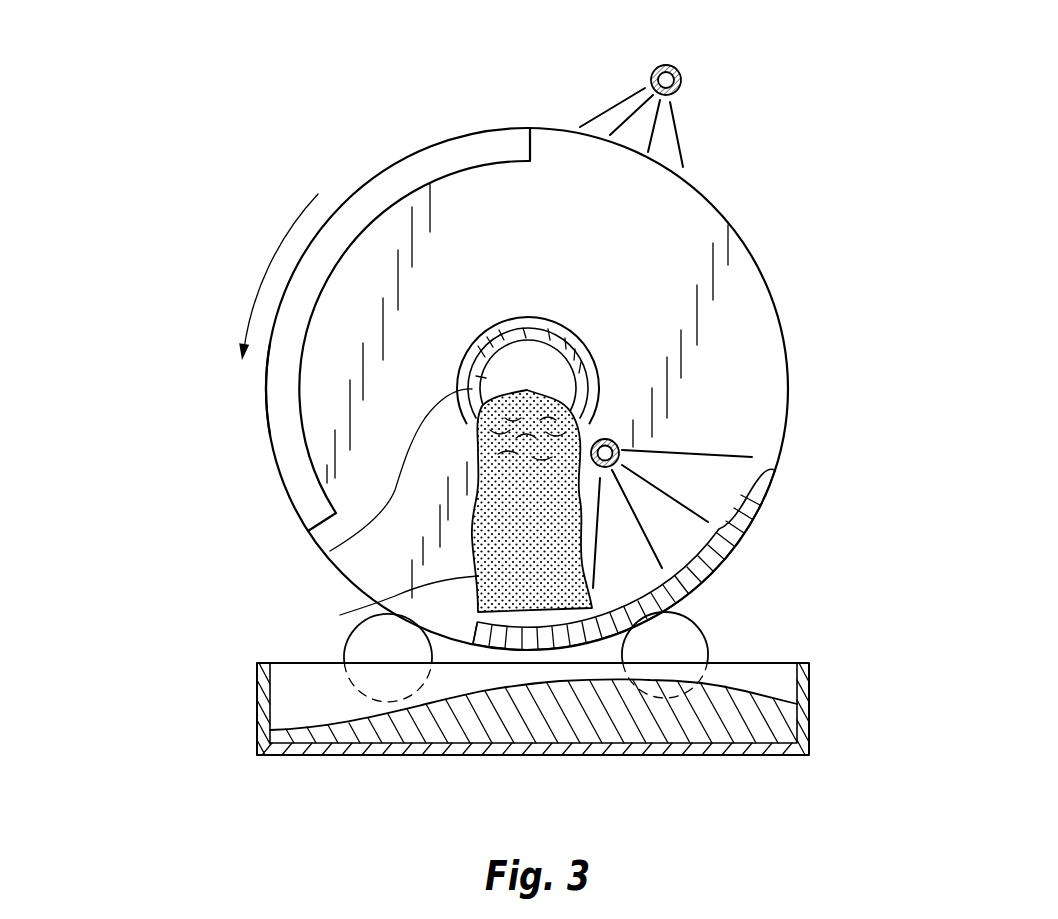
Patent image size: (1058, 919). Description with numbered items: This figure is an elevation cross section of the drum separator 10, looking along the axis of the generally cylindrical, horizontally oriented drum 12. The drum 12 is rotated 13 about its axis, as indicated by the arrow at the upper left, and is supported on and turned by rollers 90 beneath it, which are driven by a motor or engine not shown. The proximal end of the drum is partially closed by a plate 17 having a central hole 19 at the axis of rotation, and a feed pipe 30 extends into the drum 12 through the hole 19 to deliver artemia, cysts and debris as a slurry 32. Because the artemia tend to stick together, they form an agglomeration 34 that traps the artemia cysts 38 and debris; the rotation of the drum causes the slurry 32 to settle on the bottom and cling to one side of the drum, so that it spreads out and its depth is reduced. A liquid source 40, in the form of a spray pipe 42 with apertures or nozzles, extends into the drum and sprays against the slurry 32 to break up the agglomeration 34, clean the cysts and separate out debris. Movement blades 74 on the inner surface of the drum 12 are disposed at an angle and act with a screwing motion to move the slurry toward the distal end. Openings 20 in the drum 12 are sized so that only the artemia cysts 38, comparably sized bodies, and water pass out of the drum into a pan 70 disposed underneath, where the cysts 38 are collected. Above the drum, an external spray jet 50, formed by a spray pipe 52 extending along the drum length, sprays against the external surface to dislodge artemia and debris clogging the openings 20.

The drum separator 10 is at (150, 609).
The drum 12 is at (763, 272).
The rotation 13 is at (276, 251).
The plate 17 is at (527, 222).
The hole 19 is at (565, 329).
The openings 20 is at (286, 484).
The feed pipe 30 is at (330, 551).
The slurry 32 is at (340, 615).
The agglomeration 34 is at (737, 545).
The artemia cysts 38 is at (697, 735).
The liquid source 40 is at (708, 455).
The spray pipe 42 is at (608, 440).
The external spray jet 50 is at (679, 136).
The spray pipe 52 is at (680, 72).
The pan 70 is at (811, 688).
The movement blades 74 is at (269, 424).
The rollers 90 is at (684, 617).